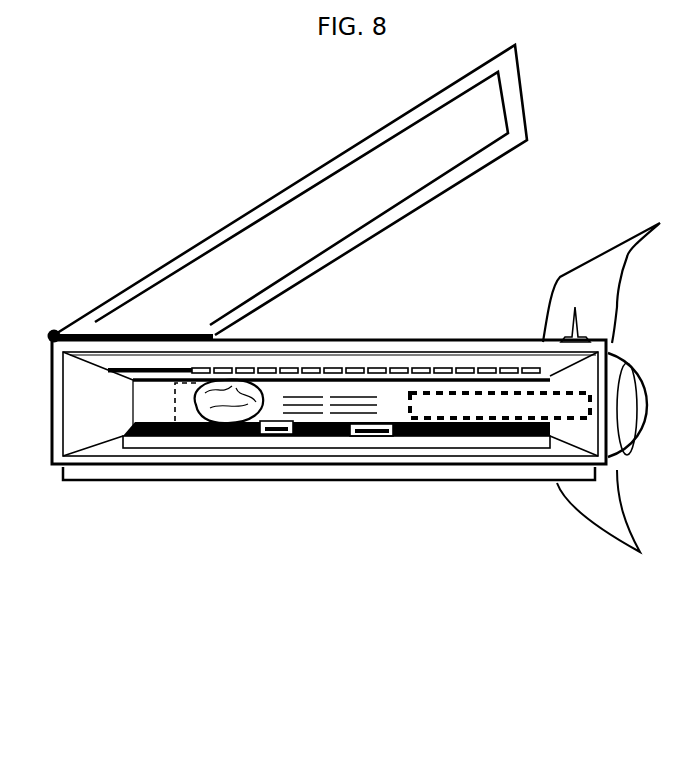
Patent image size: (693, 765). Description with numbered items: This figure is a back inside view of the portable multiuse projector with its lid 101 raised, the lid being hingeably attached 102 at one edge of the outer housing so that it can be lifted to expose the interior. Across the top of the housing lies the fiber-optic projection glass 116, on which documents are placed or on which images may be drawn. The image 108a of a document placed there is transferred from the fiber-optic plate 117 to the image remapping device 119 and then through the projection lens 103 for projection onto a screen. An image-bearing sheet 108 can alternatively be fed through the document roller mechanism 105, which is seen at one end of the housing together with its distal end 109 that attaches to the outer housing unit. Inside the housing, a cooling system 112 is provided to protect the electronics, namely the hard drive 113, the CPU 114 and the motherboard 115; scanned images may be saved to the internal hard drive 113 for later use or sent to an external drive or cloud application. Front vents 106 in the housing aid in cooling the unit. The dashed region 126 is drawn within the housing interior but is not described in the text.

The lid 101 is at (253, 208).
The hinge attachment 102 is at (55, 328).
The projection lens 103 is at (248, 381).
The document roller mechanism 105 is at (623, 350).
The front vents 106 is at (298, 397).
The image-bearing sheet 108 is at (603, 258).
The image 108a is at (562, 337).
The distal end 109 is at (617, 458).
The cooling system 112 is at (382, 472).
The hard drive 113 is at (270, 438).
The CPU 114 is at (367, 437).
The motherboard 115 is at (300, 446).
The fiber-optic projection glass 116 is at (443, 356).
The fiber-optic plate 117 is at (388, 370).
The image remapping device 119 is at (176, 396).
The heating region 126 is at (515, 400).